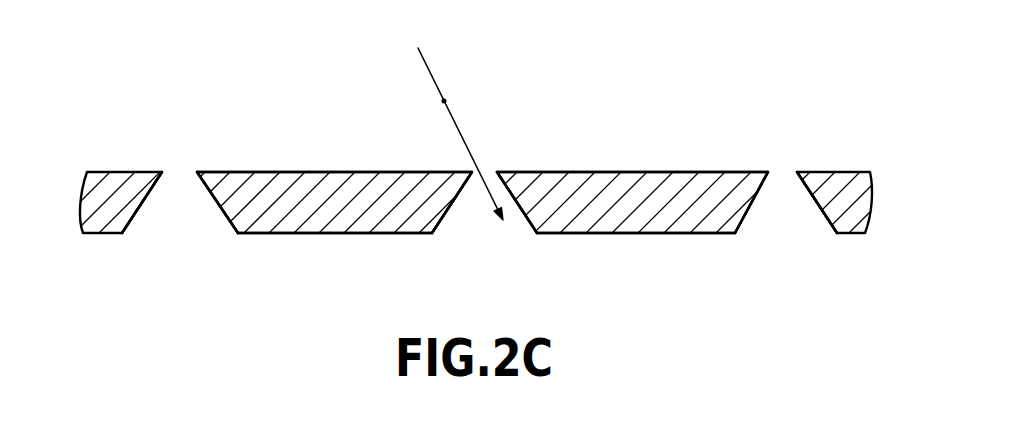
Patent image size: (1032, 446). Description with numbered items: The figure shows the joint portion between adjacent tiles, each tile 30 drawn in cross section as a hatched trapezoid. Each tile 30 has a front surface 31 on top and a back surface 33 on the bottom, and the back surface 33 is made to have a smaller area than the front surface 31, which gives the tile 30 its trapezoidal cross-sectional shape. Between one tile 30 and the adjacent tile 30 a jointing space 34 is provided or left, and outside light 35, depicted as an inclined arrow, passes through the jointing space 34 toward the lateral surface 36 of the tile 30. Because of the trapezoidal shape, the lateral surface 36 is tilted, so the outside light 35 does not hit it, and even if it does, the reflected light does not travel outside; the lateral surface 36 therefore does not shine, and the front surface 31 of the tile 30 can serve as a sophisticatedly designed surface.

The tile 30 is at (283, 167).
The front surface 31 is at (335, 172).
The back surface 33 is at (322, 233).
The jointing space 34 is at (180, 173).
The outside light 35 is at (445, 101).
The lateral surface 36 is at (148, 210).